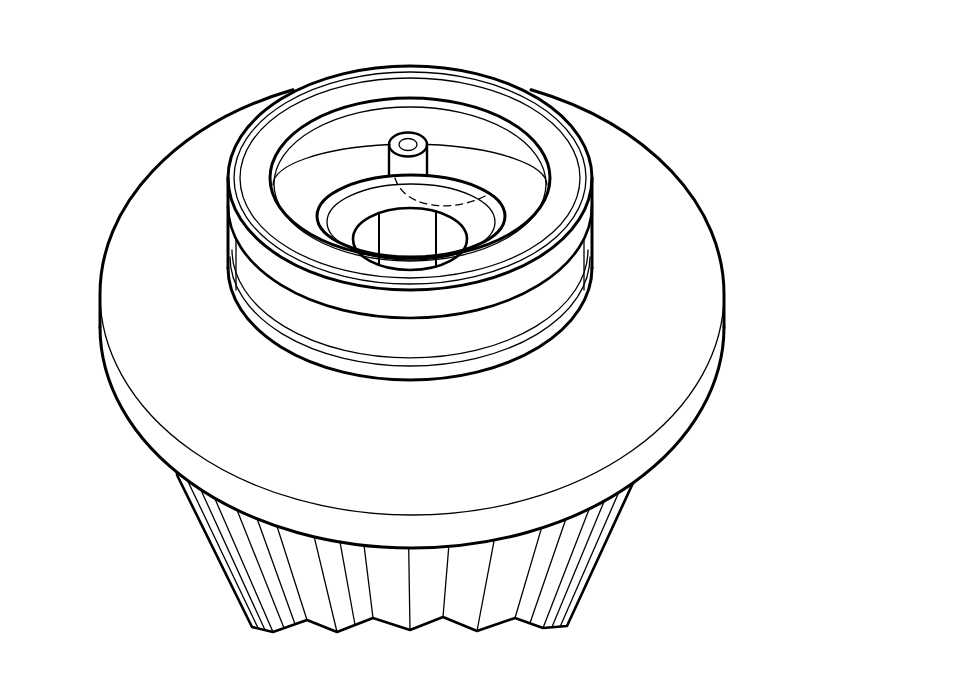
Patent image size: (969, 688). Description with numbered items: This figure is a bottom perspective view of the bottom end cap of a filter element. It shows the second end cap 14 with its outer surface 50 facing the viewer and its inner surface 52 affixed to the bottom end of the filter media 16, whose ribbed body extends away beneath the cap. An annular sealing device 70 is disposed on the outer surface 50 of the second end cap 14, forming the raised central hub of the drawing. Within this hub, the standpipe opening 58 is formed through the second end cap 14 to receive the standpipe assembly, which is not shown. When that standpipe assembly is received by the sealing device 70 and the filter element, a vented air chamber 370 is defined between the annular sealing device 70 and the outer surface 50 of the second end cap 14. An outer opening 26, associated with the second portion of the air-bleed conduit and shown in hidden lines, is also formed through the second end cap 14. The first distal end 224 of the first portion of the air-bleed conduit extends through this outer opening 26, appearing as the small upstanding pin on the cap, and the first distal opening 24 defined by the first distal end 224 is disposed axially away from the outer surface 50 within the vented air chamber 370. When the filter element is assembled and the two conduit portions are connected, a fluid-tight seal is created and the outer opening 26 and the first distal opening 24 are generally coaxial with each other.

The second end cap 14 is at (694, 131).
The outer surface 50 is at (685, 245).
The inner surface 52 is at (150, 450).
The filter media 16 is at (198, 527).
The annular sealing device 70 is at (233, 220).
The vented air chamber 370 is at (477, 140).
The standpipe opening 58 is at (362, 227).
The first distal end 224 is at (430, 140).
The first distal opening 24 is at (406, 133).
The outer opening 26 is at (485, 196).